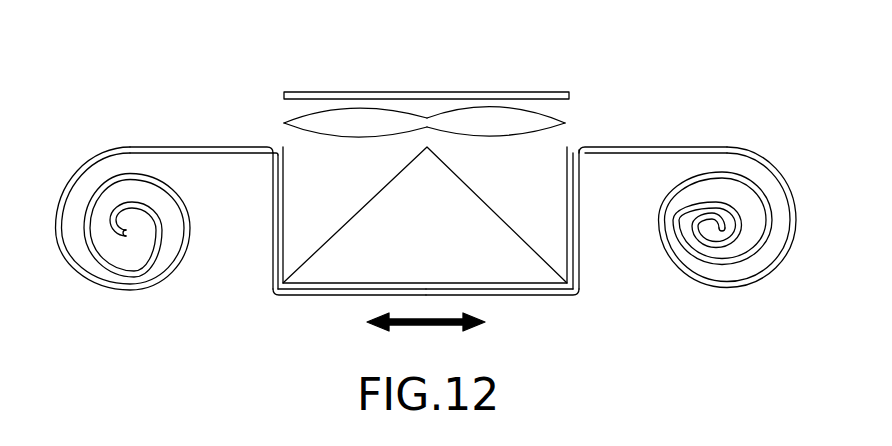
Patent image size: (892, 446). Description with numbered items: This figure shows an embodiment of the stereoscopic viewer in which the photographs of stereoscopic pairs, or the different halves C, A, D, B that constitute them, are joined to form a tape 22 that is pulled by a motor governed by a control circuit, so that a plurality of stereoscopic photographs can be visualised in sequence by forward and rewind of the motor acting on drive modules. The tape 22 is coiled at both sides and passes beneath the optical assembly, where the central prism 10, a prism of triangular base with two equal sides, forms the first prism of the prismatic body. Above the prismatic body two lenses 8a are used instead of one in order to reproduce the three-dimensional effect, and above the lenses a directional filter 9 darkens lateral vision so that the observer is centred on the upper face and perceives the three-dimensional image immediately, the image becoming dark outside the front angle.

The tape 22 is at (200, 146).
The directional filter 9 is at (432, 97).
The lenses 8a is at (497, 120).
The central prism 10 is at (418, 218).
The half of stereoscopic pair A is at (348, 293).
The half of stereoscopic pair B is at (577, 213).
The half of stereoscopic pair C is at (273, 212).
The half of stereoscopic pair D is at (500, 292).